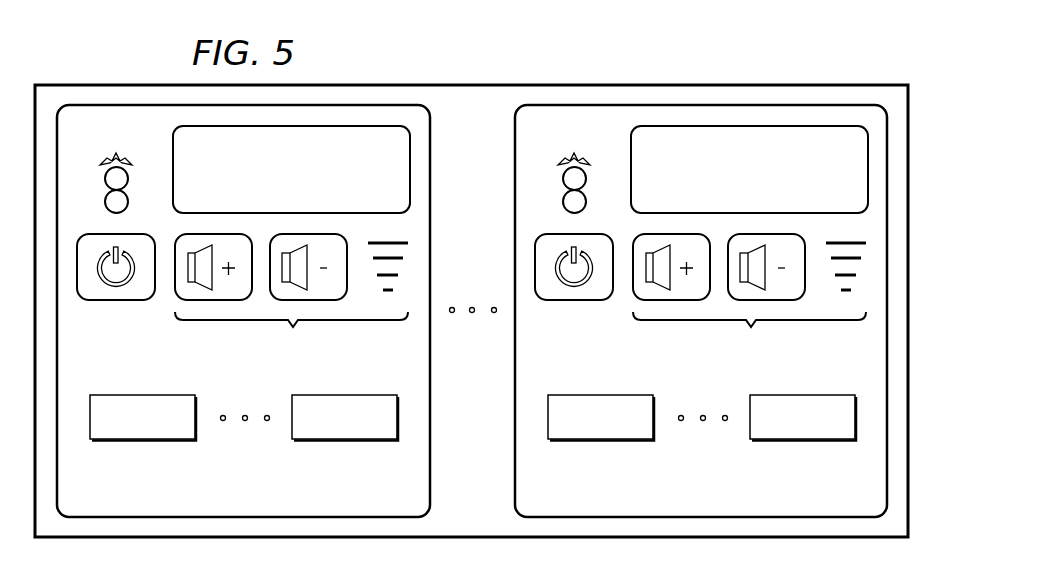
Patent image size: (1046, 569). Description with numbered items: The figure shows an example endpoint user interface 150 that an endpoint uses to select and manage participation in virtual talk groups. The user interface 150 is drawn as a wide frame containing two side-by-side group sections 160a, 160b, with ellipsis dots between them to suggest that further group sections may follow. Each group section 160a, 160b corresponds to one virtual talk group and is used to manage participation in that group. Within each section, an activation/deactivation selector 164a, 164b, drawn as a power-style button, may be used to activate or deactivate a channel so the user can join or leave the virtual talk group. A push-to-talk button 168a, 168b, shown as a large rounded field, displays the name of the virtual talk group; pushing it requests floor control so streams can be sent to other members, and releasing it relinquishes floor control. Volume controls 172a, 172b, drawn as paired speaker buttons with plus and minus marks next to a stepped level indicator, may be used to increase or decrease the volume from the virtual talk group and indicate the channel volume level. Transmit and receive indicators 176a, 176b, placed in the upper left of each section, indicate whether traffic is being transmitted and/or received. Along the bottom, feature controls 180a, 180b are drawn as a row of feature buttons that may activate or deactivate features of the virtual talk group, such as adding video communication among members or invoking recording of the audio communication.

The endpoint user interface 150 is at (585, 85).
The group section 160a is at (432, 249).
The group section 160b is at (514, 369).
The activation/deactivation selector 164a is at (122, 302).
The activation/deactivation selector 164b is at (574, 294).
The push-to-talk button 168a is at (380, 187).
The push-to-talk button 168b is at (749, 169).
The volume controls 172a is at (291, 296).
The volume controls 172b is at (749, 296).
The transmit and receive indicators 176a is at (116, 171).
The transmit and receive indicators 176b is at (574, 171).
The feature controls 180a is at (142, 442).
The feature controls 180b is at (702, 445).